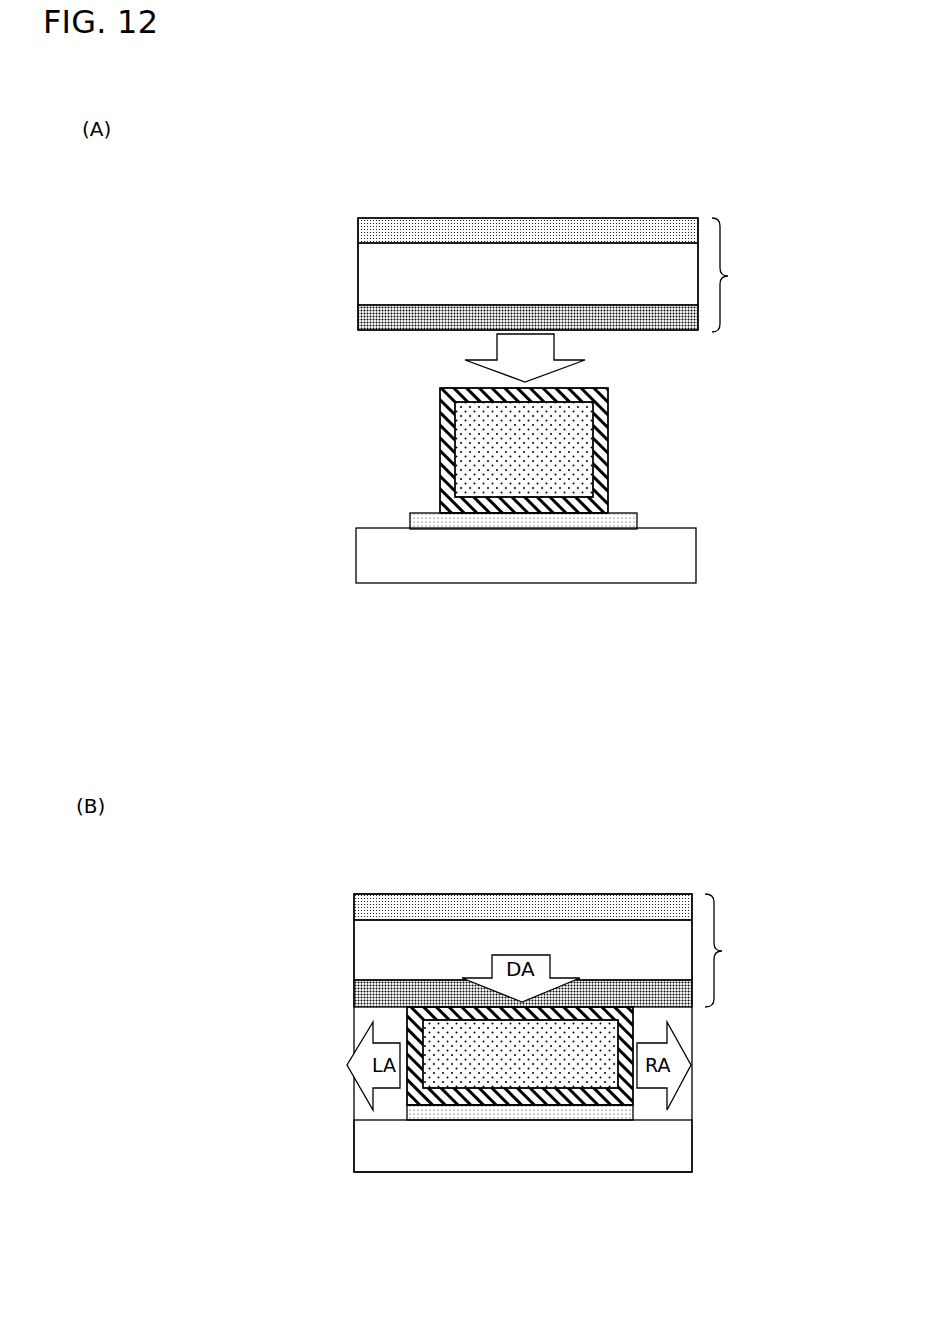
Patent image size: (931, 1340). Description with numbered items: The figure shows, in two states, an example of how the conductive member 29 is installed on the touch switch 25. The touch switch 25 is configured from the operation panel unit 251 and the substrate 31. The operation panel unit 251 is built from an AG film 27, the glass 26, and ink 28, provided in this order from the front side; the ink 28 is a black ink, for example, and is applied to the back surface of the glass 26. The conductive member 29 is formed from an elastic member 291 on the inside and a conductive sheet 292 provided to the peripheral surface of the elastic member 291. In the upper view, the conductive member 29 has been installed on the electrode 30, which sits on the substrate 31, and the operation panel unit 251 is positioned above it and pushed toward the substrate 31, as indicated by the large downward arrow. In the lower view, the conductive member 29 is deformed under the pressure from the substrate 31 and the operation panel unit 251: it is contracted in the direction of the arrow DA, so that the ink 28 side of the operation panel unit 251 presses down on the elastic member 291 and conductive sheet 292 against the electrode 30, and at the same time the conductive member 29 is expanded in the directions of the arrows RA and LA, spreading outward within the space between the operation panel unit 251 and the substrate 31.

The touch switch 25 is at (646, 193).
The operation panel unit 251 is at (746, 612).
The glass 26 is at (358, 277).
The AG film 27 is at (358, 233).
The ink 28 is at (358, 317).
The conductive member 29 is at (650, 492).
The elastic member 291 is at (595, 443).
The conductive sheet 292 is at (440, 457).
The electrode 30 is at (522, 530).
The substrate 31 is at (696, 558).